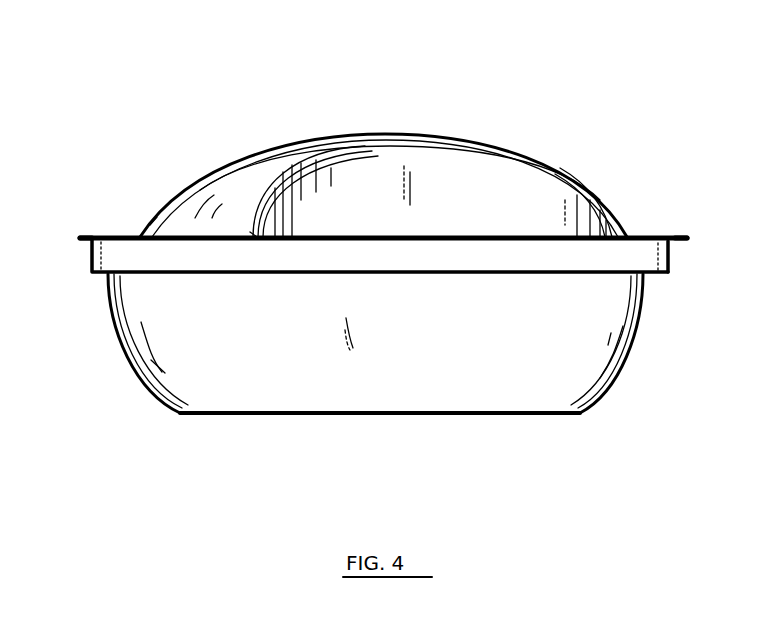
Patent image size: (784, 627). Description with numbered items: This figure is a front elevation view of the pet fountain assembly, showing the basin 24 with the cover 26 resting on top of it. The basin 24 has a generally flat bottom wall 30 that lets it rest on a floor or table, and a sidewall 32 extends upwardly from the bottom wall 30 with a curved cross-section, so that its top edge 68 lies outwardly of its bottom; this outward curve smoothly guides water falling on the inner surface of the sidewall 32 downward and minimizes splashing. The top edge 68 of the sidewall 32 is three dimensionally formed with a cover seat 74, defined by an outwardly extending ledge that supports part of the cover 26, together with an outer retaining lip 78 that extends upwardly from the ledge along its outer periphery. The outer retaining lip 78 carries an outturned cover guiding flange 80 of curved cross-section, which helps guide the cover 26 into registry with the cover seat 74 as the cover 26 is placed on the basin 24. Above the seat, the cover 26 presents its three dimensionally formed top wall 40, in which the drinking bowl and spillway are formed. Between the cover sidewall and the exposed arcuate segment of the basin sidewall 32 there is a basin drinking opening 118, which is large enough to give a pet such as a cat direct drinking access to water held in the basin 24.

The basin 24 is at (182, 442).
The cover 26 is at (326, 92).
The bottom wall 30 is at (379, 415).
The sidewall 32 is at (165, 372).
The top wall 40 is at (240, 178).
The top edge 68 is at (92, 222).
The cover seat 74 is at (103, 276).
The outer retaining lip 78 is at (672, 262).
The cover guiding flange 80 is at (82, 238).
The basin drinking opening 118 is at (448, 172).